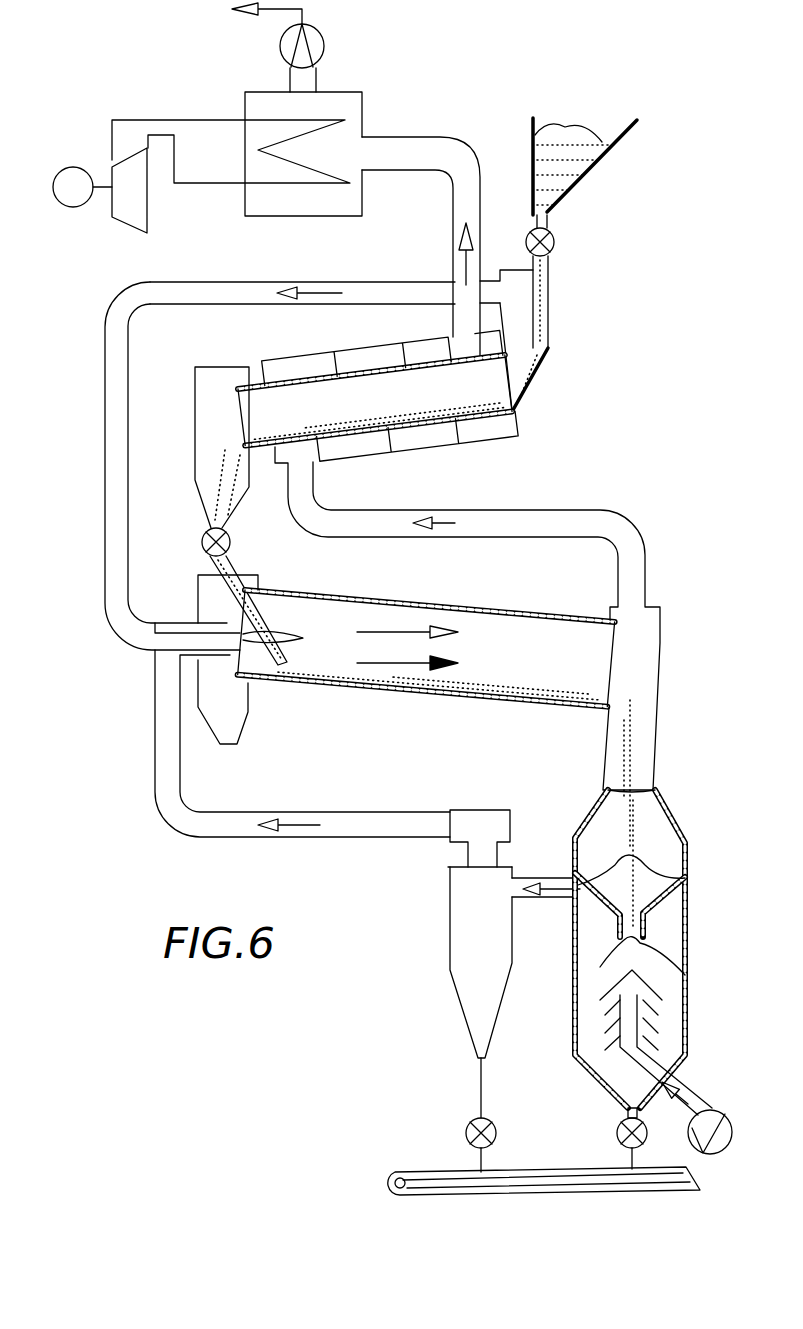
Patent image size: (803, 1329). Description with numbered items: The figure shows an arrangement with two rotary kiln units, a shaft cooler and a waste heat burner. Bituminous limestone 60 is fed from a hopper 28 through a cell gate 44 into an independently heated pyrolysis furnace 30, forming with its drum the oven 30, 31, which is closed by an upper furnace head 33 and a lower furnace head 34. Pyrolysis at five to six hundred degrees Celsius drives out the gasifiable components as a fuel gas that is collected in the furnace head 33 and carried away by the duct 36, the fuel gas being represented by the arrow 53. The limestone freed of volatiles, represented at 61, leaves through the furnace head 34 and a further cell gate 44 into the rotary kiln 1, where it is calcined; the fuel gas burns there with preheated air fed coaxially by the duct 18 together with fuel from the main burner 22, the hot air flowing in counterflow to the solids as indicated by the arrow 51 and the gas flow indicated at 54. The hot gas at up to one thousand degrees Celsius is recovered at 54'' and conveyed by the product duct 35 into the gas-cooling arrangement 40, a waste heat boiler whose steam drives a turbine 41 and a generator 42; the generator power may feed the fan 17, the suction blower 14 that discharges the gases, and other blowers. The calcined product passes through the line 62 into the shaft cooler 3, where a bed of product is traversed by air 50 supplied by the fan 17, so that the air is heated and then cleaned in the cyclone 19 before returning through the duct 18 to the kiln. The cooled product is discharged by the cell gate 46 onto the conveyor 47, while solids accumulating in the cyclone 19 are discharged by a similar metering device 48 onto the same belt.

The rotary kiln 1 is at (560, 607).
The shaft cooler 3 is at (692, 905).
The suction blower 14 is at (324, 46).
The fan 17 is at (712, 1110).
The duct 18 is at (393, 812).
The cyclone 19 is at (450, 907).
The main burner 22 is at (218, 660).
The hopper 28 is at (583, 183).
The pyrolysis furnace 30 is at (262, 448).
The oven 31 is at (515, 425).
The furnace head 33 is at (548, 345).
The furnace head 34 is at (195, 443).
The product duct 35 is at (481, 178).
The duct 36 is at (115, 290).
The gas-cooling arrangement 40 is at (362, 113).
The turbine 41 is at (118, 222).
The generator 42 is at (68, 167).
The cell gate 44 is at (556, 247).
The cell gate 46 is at (620, 1130).
The conveyor 47 is at (535, 1170).
The metering device 48 is at (467, 1128).
The air 50 is at (688, 1090).
The arrow 51 is at (290, 826).
The arrow 53 is at (318, 292).
The hot gas flow 54 is at (467, 618).
The hot gas 54'' is at (438, 254).
The bituminous limestone 60 is at (565, 128).
The devolatilized limestone 61 is at (276, 685).
The line 62 is at (622, 741).